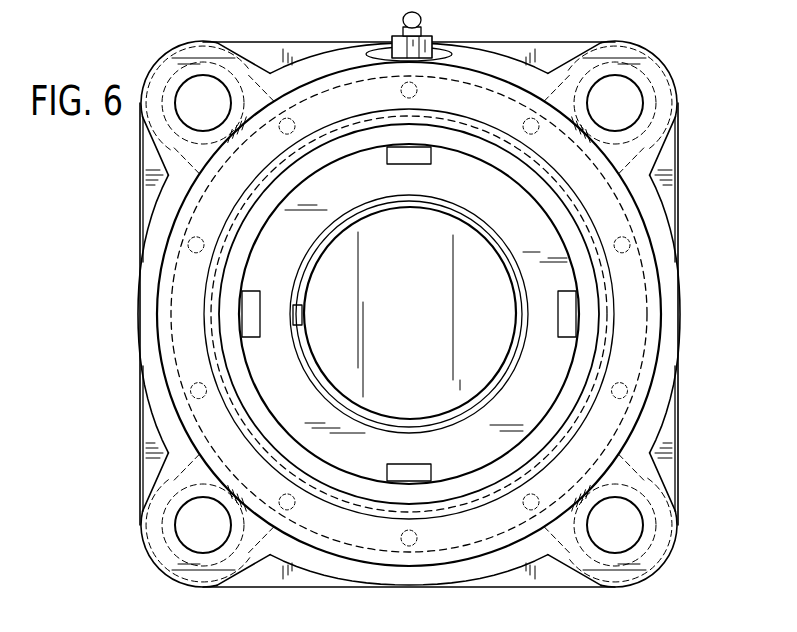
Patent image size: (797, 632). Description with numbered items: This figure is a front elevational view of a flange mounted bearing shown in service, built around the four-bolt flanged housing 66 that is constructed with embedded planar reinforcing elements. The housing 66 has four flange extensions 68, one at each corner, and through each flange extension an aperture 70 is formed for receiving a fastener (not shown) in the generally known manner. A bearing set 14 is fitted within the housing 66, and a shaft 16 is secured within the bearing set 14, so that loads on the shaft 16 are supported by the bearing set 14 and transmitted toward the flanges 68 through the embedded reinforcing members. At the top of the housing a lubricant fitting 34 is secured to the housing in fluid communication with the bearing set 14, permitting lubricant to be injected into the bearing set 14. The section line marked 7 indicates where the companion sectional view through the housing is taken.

The section line 7- 7 is at (103, 53).
The bearing set 14 is at (567, 278).
The shaft 16 is at (421, 325).
The lubricant fitting 34 is at (432, 43).
The four-bolt flanged housing 66 is at (686, 186).
The flange extensions 68 is at (662, 117).
The apertures 70 is at (617, 98).